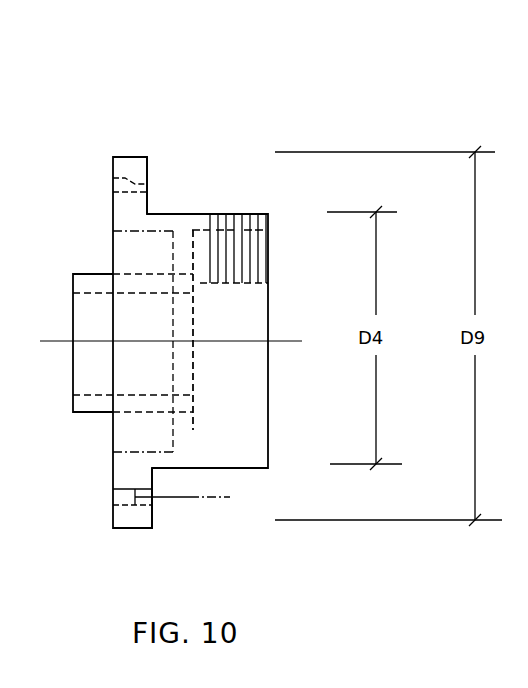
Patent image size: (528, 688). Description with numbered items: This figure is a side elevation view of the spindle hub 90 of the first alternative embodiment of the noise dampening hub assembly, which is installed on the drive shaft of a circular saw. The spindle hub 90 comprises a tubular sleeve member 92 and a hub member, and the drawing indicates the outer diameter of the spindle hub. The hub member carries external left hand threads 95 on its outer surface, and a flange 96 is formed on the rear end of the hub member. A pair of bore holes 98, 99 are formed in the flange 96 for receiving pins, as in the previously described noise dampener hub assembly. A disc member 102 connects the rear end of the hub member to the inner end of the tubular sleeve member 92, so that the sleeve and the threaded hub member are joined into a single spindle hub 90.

The spindle hub 90 is at (263, 103).
The bore hole 99 is at (148, 181).
The tubular sleeve member 92 is at (97, 273).
The external left hand threads 95 is at (255, 213).
The disc member 102 is at (178, 248).
The bore hole 98 is at (155, 500).
The flange 96 is at (135, 520).